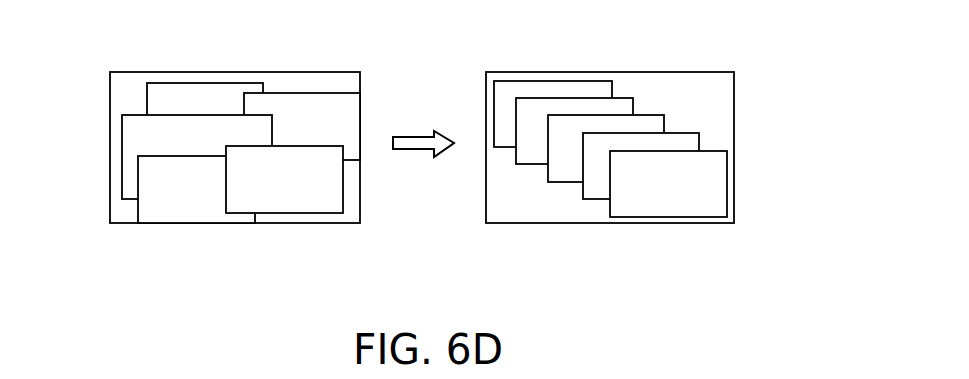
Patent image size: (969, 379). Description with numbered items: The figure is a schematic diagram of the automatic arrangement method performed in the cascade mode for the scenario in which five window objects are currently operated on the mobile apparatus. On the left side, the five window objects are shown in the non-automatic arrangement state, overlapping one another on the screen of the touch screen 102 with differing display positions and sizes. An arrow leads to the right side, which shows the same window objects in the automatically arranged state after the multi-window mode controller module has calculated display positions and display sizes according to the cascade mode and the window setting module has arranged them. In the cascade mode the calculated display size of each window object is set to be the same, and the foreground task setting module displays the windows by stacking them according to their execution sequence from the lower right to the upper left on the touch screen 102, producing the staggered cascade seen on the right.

The touch screen 102 is at (110, 148).